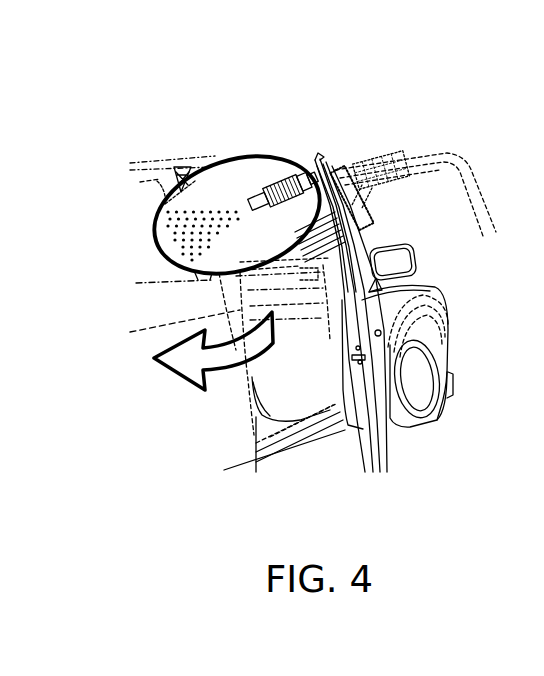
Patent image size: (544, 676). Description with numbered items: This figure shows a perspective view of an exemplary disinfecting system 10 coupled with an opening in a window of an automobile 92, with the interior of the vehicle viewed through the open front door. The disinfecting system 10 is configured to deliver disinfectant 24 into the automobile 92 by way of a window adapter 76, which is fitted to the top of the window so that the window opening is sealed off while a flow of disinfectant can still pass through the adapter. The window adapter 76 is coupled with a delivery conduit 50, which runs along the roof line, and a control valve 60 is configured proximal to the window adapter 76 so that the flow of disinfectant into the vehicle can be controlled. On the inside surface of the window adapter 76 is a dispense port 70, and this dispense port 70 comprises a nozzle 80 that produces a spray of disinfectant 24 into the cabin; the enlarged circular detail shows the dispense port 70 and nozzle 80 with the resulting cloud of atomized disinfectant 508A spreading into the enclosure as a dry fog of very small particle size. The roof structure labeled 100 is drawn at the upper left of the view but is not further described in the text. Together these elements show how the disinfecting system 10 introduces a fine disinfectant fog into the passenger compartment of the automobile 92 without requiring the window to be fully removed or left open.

The disinfecting system 10 is at (302, 103).
The roof rail 100 is at (160, 205).
The disinfectant 24 is at (180, 168).
The atomized disinfectant 508A is at (155, 247).
The dispense port 70 is at (285, 182).
The nozzle 80 is at (263, 221).
The window adapter 76 is at (341, 165).
The control valve 60 is at (400, 168).
The delivery conduit 50 is at (467, 164).
The automobile 92 is at (316, 406).